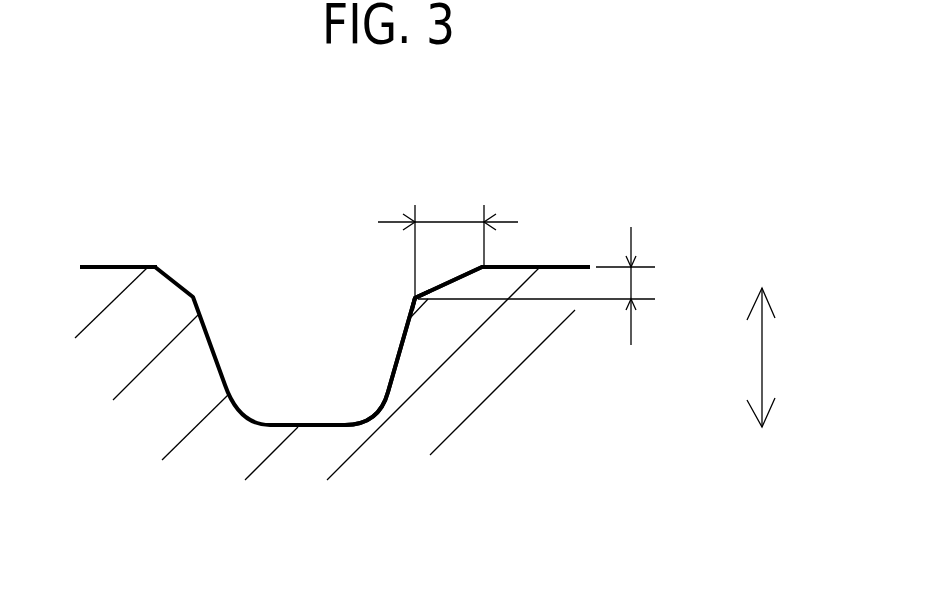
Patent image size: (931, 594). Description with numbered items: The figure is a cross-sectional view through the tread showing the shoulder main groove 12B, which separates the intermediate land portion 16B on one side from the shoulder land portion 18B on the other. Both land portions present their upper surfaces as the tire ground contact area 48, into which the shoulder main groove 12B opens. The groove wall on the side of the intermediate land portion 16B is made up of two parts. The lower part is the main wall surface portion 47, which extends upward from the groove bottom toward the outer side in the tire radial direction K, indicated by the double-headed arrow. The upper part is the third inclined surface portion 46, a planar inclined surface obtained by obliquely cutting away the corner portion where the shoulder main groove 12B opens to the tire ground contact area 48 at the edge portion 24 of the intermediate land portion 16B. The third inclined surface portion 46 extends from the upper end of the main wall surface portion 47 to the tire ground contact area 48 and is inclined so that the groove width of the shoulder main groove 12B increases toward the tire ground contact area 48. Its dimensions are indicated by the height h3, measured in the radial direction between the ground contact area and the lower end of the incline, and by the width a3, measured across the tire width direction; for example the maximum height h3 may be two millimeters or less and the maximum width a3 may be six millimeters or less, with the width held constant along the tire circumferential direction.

The shoulder main groove 12B is at (235, 317).
The shoulder land portion 18B is at (127, 265).
The intermediate land portion 16B is at (537, 267).
The tire ground contact area 48 is at (575, 260).
The third inclined surface portion 46 is at (445, 282).
The edge portion 24 is at (415, 298).
The main wall surface portion 47 is at (403, 340).
The width of the third inclined surface portion a3 is at (445, 218).
The height of the third inclined surface portion h3 is at (632, 287).
The tire radial direction K is at (772, 357).